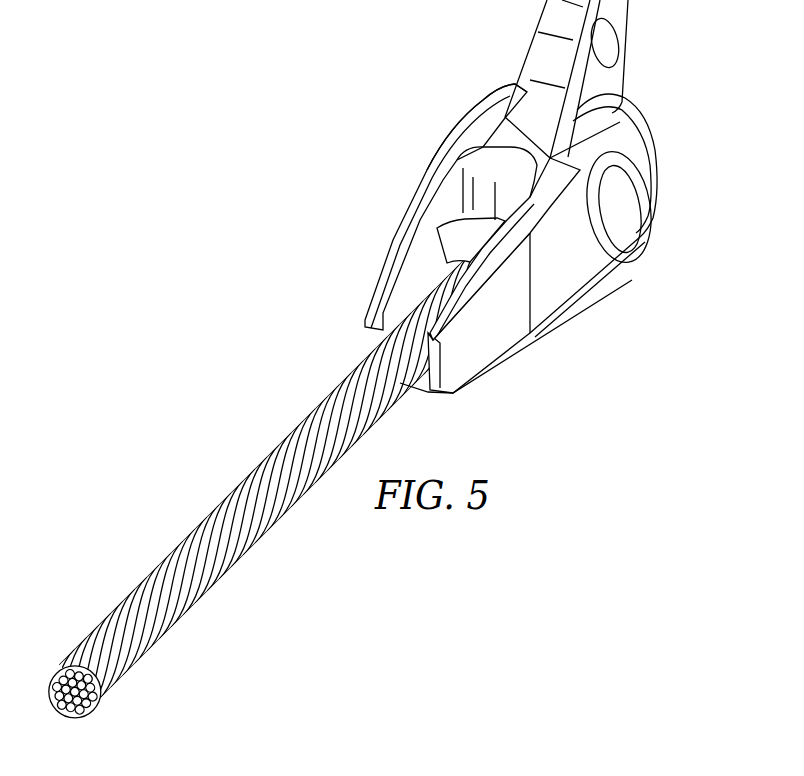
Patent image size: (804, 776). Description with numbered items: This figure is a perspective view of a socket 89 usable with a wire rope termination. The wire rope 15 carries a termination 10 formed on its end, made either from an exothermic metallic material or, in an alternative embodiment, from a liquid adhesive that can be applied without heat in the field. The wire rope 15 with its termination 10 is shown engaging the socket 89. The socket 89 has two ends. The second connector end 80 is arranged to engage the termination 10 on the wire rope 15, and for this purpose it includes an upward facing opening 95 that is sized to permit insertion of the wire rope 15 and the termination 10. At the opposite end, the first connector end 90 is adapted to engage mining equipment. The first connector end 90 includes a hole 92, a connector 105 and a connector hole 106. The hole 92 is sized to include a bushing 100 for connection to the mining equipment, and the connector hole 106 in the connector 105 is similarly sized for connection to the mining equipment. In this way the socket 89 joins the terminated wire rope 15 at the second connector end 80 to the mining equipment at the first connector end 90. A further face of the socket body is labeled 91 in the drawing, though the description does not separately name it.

The wire rope 15 is at (200, 515).
The second connector end 80 is at (385, 271).
The socket 89 is at (441, 158).
The upward facing opening 95 is at (436, 243).
The termination 10 is at (473, 243).
The front face 91 is at (493, 347).
The first connector end 90 is at (652, 158).
The hole 92 is at (627, 262).
The bushing 100 is at (617, 223).
The connector 105 is at (616, 82).
The connector hole 106 is at (600, 44).